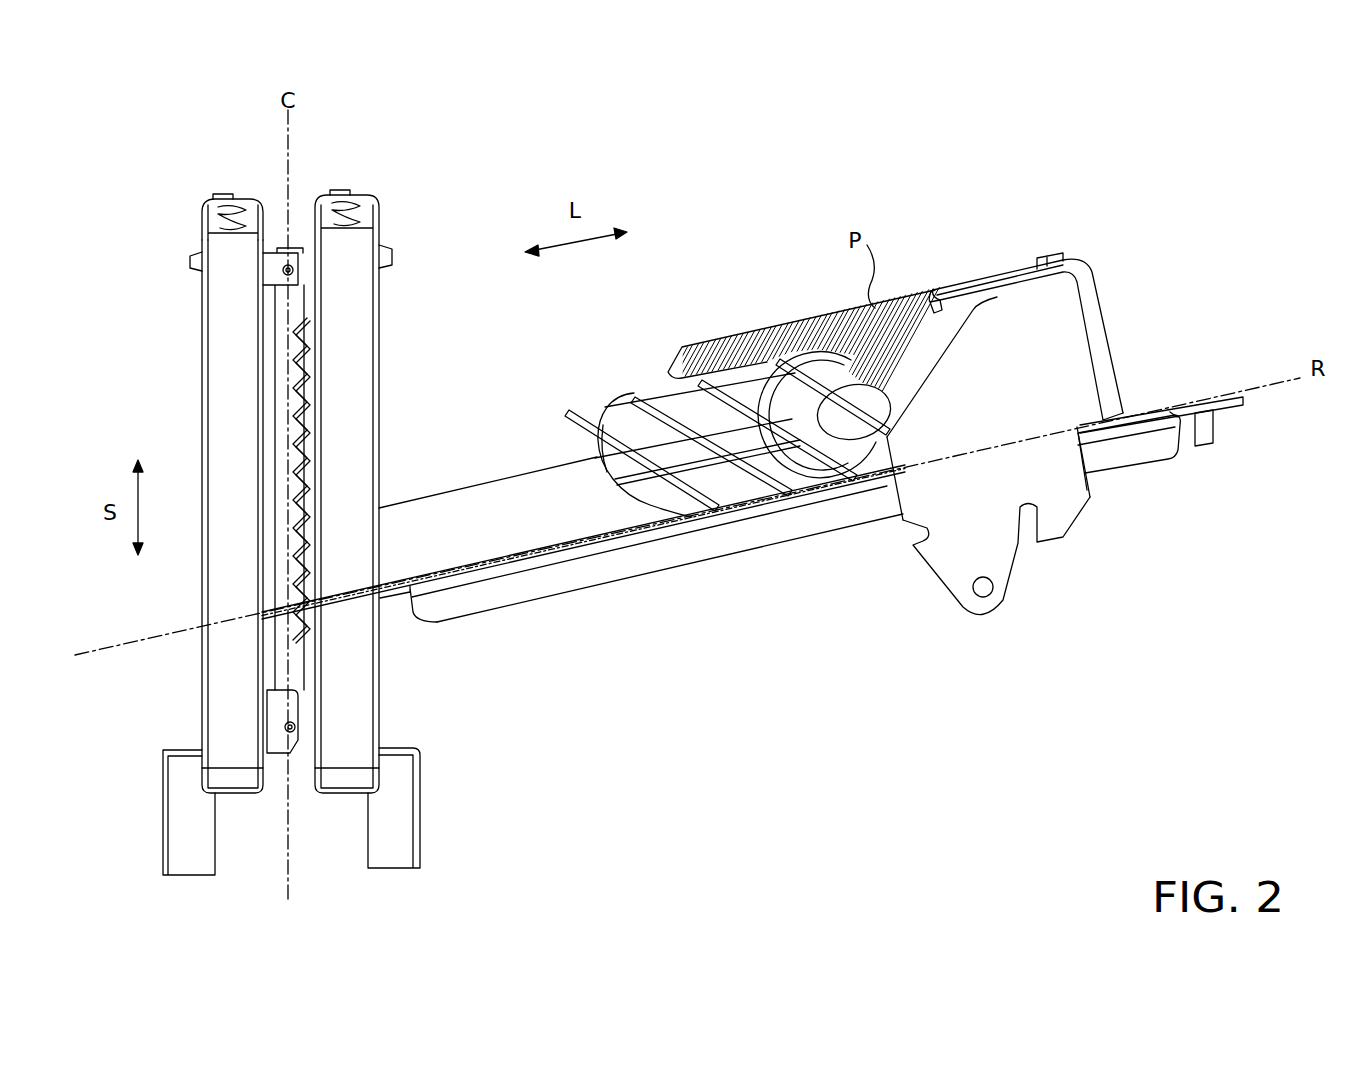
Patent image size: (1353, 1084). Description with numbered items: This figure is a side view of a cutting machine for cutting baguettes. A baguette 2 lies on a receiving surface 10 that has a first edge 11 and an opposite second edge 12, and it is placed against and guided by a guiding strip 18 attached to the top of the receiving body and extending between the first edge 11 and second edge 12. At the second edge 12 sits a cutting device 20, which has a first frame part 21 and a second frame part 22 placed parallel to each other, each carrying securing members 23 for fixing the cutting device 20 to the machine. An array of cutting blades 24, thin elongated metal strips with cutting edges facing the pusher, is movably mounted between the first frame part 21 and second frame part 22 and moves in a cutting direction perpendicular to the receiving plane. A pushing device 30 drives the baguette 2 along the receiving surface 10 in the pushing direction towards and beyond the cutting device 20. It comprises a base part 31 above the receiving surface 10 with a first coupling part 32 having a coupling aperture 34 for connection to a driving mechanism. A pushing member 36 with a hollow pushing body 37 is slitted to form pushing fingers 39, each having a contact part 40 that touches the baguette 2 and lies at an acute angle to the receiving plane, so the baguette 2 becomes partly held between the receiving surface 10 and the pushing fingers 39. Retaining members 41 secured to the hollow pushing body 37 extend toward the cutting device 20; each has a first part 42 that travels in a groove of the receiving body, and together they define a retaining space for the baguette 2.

The baguette 2 is at (670, 403).
The receiving surface 10 is at (665, 557).
The first edge 11 is at (1234, 395).
The second edge 12 is at (305, 602).
The guiding strip 18 is at (455, 508).
The cutting device 20 is at (245, 198).
The first frame part 21 is at (358, 236).
The second frame part 22 is at (215, 286).
The securing members 23 is at (182, 843).
The cutting blades 24 is at (280, 415).
The pushing device 30 is at (1067, 340).
The base part 31 is at (1082, 262).
The first coupling part 32 is at (1037, 477).
The coupling aperture 34 is at (990, 595).
The pushing member 36 is at (995, 297).
The hollow pushing body 37 is at (1050, 253).
The pushing fingers 39 is at (923, 297).
The contact part 40 is at (940, 300).
The retaining members 41 is at (590, 425).
The first part 42 is at (643, 458).